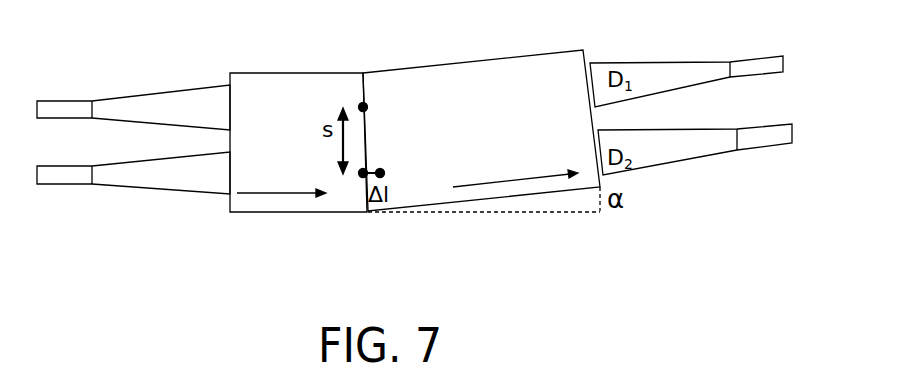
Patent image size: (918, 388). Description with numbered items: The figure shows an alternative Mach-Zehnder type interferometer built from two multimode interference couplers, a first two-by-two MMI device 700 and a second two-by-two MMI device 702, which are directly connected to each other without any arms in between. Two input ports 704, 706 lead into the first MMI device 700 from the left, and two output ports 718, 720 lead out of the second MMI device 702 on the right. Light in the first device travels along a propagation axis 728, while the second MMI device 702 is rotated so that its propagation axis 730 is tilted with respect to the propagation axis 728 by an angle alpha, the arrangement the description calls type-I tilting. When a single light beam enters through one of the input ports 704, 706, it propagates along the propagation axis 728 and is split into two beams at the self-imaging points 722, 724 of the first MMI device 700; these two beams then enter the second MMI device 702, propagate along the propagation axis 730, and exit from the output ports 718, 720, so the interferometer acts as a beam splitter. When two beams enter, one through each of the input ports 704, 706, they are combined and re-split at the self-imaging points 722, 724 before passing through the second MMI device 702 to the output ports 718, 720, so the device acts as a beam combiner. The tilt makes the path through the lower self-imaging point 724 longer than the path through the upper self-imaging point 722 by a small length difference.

The 2×2 MMI device 700 is at (298, 125).
The 2×2 MMI device 702 is at (481, 113).
The input port 704 is at (133, 92).
The input port 706 is at (133, 161).
The output port 718 is at (686, 65).
The output port 720 is at (695, 156).
The self-imaging point 722 is at (367, 106).
The self-imaging point 724 is at (370, 168).
The propagation axis 728 is at (281, 181).
The propagation axis 730 is at (515, 165).